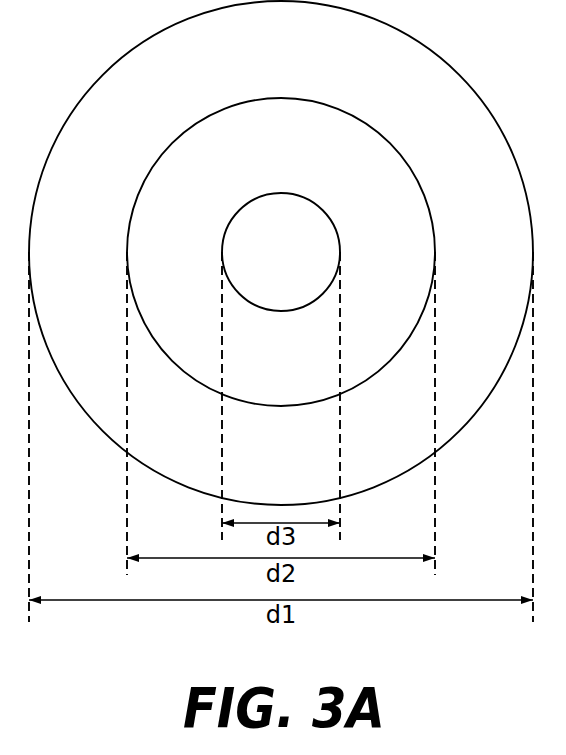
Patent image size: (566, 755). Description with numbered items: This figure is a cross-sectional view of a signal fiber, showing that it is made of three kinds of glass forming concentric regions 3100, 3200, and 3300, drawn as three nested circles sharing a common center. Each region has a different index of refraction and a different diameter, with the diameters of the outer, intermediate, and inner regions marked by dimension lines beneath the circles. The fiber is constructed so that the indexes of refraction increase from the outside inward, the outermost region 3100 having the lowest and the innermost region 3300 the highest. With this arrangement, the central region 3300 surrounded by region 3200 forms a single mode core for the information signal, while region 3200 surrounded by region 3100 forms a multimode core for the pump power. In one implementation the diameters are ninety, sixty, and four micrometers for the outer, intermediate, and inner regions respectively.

The concentric region 3100 is at (281, 253).
The concentric region 3200 is at (281, 252).
The concentric region 3300 is at (281, 252).